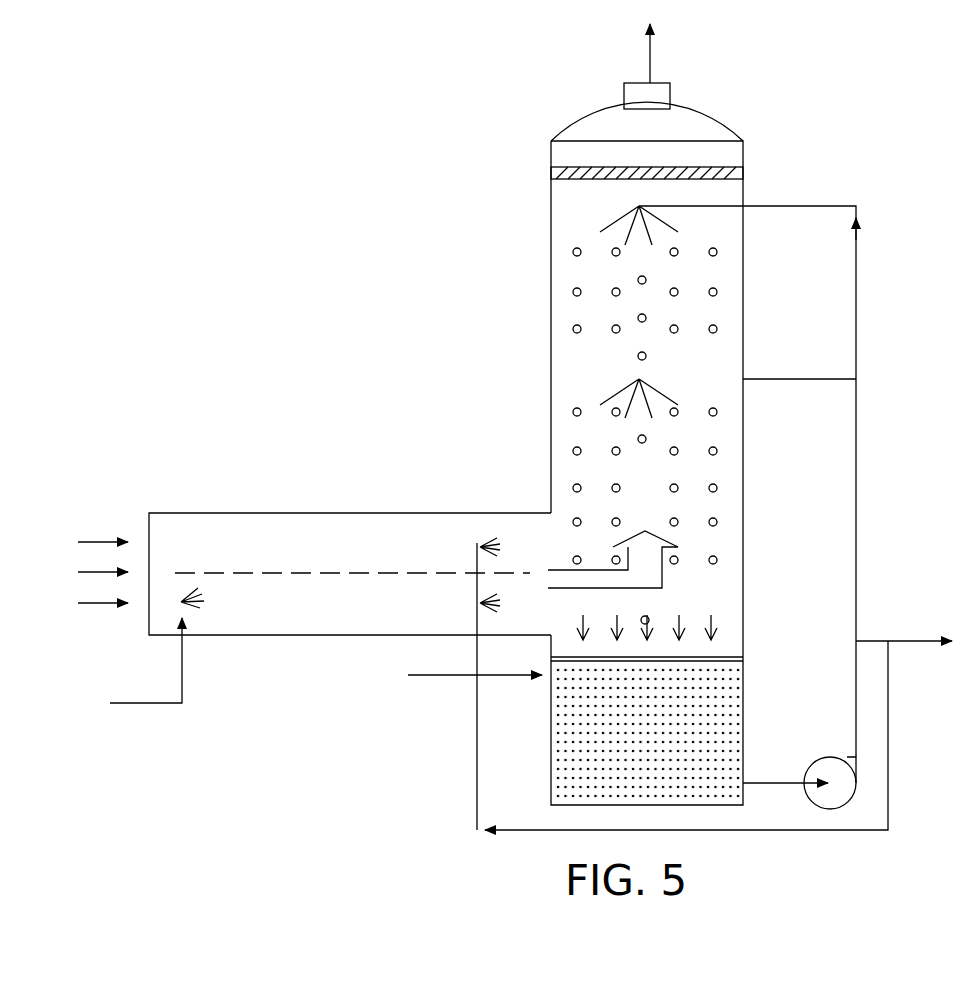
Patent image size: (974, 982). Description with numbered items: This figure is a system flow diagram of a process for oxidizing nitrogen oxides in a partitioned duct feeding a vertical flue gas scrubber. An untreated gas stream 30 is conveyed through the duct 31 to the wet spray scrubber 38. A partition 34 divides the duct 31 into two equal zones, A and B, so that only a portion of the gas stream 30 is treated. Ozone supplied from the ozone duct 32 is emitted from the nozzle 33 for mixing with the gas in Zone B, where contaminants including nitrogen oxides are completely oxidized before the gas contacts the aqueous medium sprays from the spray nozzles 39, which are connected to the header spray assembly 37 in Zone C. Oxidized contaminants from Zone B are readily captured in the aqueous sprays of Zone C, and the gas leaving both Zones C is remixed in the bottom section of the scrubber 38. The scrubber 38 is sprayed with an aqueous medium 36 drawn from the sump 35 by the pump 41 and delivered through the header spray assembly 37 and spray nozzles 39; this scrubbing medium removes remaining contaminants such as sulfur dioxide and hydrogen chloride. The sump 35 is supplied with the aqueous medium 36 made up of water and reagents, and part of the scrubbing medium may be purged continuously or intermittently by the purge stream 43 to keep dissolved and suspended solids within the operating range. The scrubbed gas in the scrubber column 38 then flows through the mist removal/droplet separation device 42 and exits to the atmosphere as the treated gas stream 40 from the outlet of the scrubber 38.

The untreated gas stream 30 is at (100, 542).
The duct 31 is at (200, 532).
The ozone duct 32 is at (128, 668).
The nozzle 33 is at (214, 622).
The partition 34 is at (410, 562).
The sump 35 is at (514, 788).
The aqueous medium 36 is at (447, 675).
The header spray assembly 37 is at (856, 250).
The wet spray scrubber 38 is at (752, 522).
The spray nozzles 39 is at (636, 256).
The treated gas stream 40 is at (651, 59).
The pump 41 is at (796, 740).
The mist removal/droplet separation device 42 is at (528, 172).
The purge stream 43 is at (910, 641).